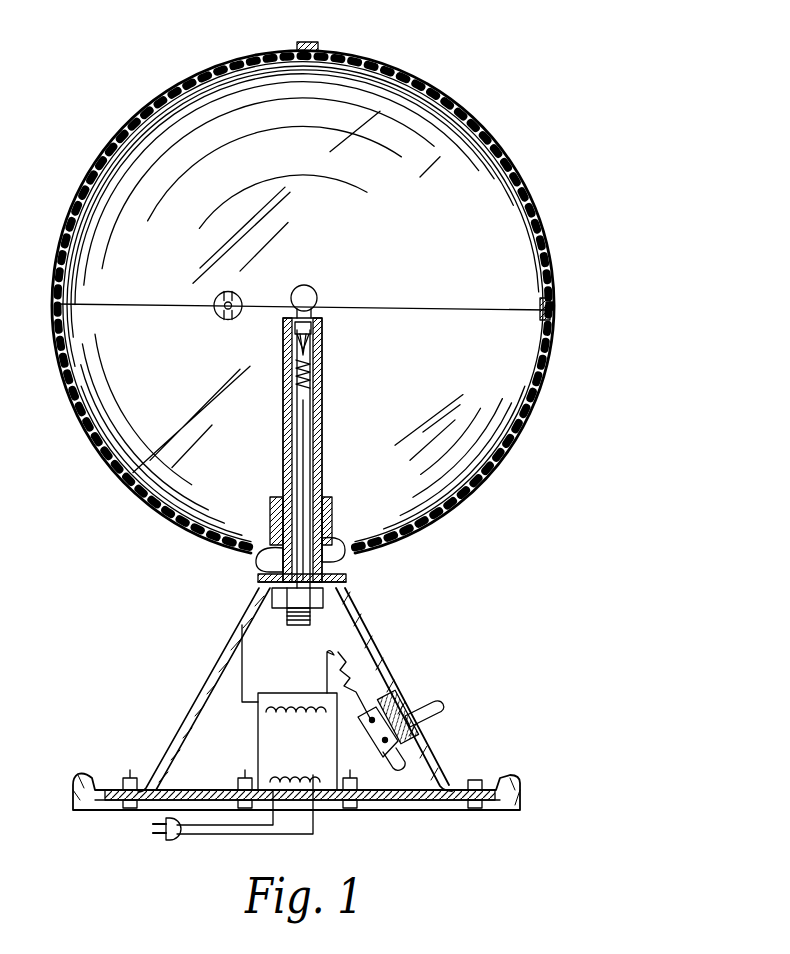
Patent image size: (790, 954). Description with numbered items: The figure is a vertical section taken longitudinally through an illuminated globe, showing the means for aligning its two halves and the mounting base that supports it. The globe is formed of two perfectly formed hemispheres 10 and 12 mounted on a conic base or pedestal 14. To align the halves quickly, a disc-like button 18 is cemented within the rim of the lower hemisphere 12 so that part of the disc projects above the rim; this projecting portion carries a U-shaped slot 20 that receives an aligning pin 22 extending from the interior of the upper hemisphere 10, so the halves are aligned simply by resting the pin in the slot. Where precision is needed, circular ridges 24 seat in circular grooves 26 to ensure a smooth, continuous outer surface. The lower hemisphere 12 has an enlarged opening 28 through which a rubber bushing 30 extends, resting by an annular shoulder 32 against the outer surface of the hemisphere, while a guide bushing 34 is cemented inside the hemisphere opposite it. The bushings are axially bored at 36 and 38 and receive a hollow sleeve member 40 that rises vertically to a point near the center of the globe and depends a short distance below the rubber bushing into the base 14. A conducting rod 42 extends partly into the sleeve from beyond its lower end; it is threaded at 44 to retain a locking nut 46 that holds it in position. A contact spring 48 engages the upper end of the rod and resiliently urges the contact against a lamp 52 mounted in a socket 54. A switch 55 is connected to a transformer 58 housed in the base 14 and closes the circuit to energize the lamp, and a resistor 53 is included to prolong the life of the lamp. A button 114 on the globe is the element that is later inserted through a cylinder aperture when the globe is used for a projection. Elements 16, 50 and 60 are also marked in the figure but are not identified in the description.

The hemisphere 10 is at (473, 118).
The hemisphere 12 is at (520, 440).
The button 114 is at (310, 44).
The conic base or pedestal 14 is at (368, 655).
The base 16 is at (296, 790).
The disc-like button 18 is at (550, 302).
The U-shaped slot 20 is at (234, 296).
The aligning pin 22 is at (236, 314).
The circular ridges 24 is at (552, 314).
The circular grooves 26 is at (556, 306).
The enlarged opening 28 is at (262, 566).
The rubber bushing 30 is at (335, 541).
The annular shoulder 32 is at (346, 568).
The guide bushing 34 is at (272, 505).
The axial bore 36 is at (336, 580).
The axial bore 38 is at (326, 502).
The hollow sleeve member 40 is at (322, 398).
The conducting rod 42 is at (297, 405).
The threaded portion 44 is at (310, 620).
The locking nut 46 is at (291, 608).
The contact spring 48 is at (320, 374).
The contact 50 is at (318, 350).
The lamp 52 is at (304, 285).
The resistor 53 is at (356, 678).
The socket 54 is at (293, 338).
The switch 55 is at (432, 700).
The transformer 58 is at (308, 744).
The plug cord 60 is at (233, 807).